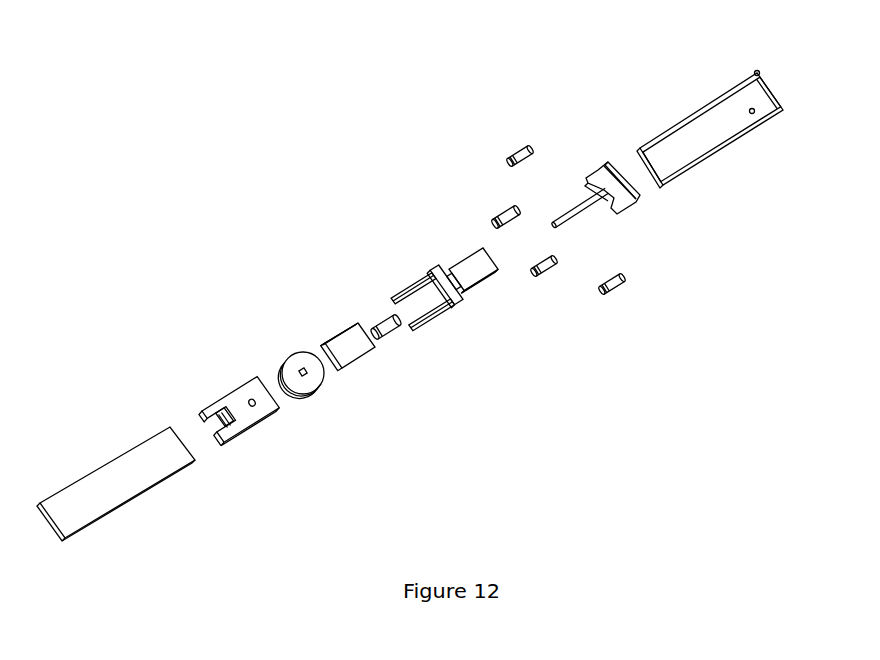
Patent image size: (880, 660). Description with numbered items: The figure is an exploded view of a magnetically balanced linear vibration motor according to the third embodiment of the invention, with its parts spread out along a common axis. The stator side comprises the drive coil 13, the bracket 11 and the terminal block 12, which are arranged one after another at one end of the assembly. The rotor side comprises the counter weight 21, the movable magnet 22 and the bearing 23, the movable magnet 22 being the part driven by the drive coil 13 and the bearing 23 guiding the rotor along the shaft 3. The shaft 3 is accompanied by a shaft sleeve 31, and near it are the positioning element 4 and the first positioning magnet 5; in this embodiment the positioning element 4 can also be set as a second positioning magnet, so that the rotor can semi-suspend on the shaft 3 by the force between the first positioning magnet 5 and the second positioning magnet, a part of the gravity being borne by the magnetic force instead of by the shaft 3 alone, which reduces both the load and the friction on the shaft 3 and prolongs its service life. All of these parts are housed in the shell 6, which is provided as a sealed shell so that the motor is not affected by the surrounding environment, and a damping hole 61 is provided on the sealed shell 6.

The shaft 3 is at (633, 230).
The positioning element 4 is at (467, 176).
The first positioning magnet 5 is at (699, 307).
The shell 6 is at (732, 130).
The bracket 11 is at (277, 425).
The terminal block 12 is at (270, 348).
The drive coil 13 is at (120, 491).
The counter weight 21 is at (470, 297).
The movable magnet 22 is at (388, 366).
The bearing 23 is at (343, 295).
The shaft sleeve 31 is at (625, 123).
The damping hole 61 is at (789, 130).